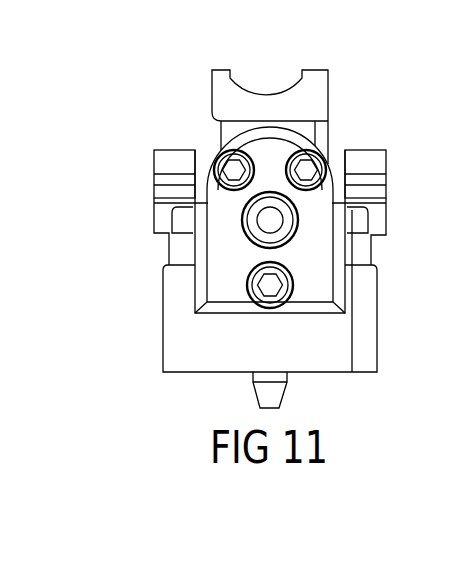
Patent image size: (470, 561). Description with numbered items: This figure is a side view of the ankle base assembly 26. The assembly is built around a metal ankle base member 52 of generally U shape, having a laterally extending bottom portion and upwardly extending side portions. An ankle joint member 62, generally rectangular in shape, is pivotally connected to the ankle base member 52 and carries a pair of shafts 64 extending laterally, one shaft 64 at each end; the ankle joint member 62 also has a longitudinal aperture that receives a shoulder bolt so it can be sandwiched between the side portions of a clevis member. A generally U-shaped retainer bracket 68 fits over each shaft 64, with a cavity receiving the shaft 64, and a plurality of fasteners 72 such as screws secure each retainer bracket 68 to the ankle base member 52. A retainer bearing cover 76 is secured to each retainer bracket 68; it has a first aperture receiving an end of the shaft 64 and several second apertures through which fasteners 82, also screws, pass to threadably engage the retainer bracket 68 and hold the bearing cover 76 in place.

The ankle base assembly 26 is at (390, 329).
The ankle base member 52 is at (363, 323).
The ankle joint member 62 is at (312, 80).
The shaft 64 is at (267, 218).
The retainer bracket 68 is at (176, 158).
The fasteners 72 is at (178, 212).
The retainer bearing cover 76 is at (222, 276).
The fasteners 82 is at (270, 288).